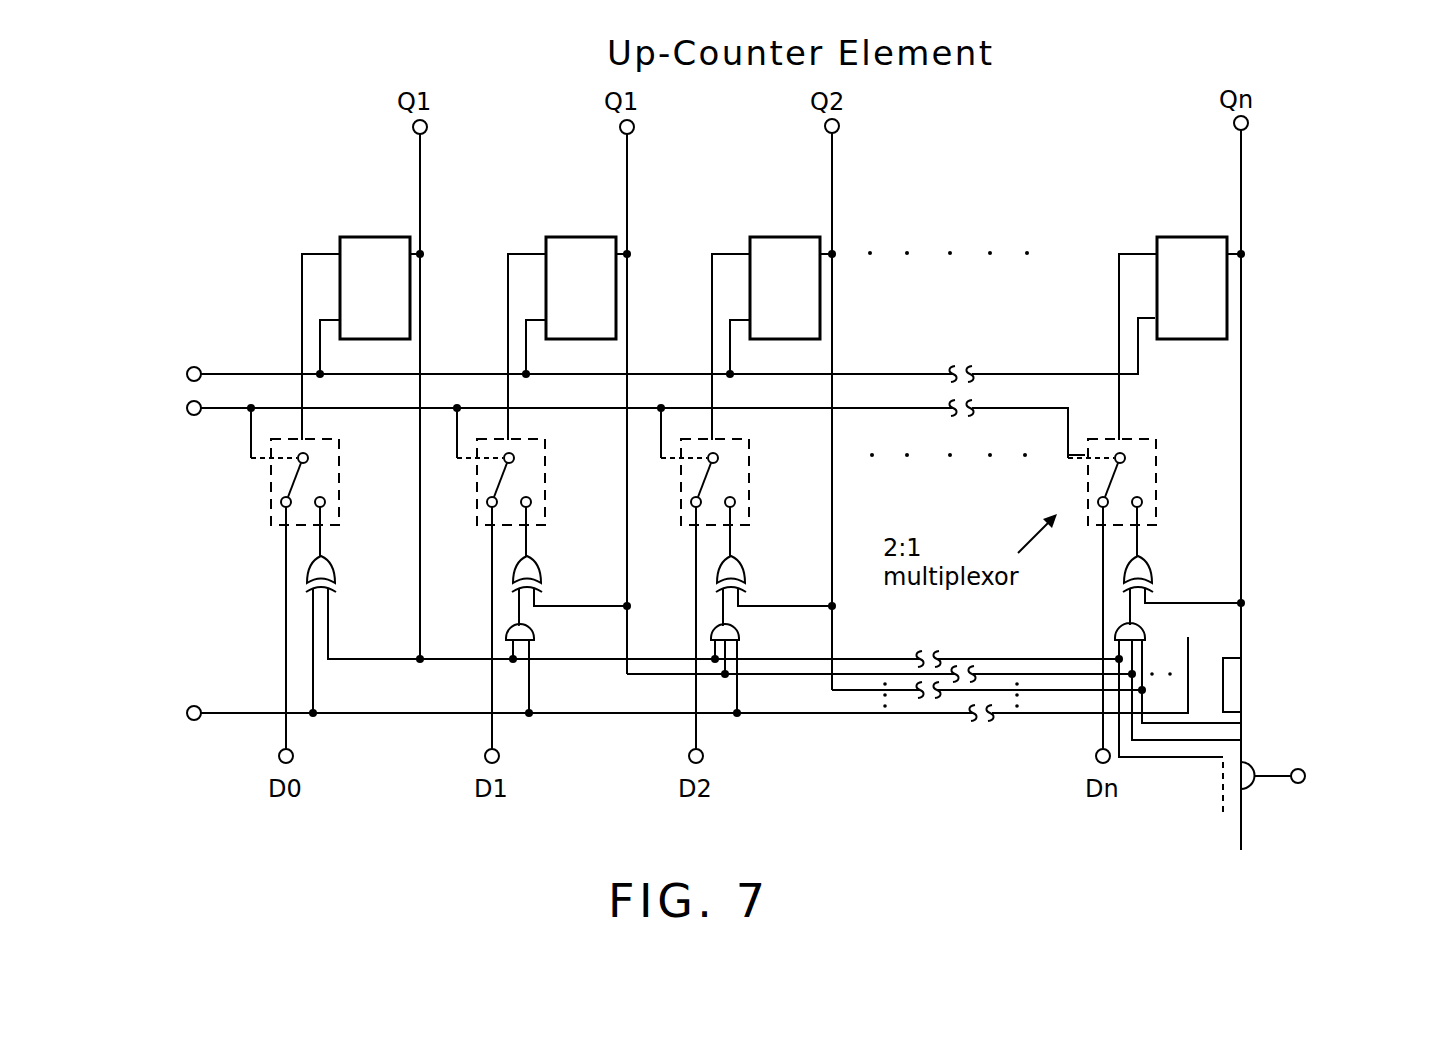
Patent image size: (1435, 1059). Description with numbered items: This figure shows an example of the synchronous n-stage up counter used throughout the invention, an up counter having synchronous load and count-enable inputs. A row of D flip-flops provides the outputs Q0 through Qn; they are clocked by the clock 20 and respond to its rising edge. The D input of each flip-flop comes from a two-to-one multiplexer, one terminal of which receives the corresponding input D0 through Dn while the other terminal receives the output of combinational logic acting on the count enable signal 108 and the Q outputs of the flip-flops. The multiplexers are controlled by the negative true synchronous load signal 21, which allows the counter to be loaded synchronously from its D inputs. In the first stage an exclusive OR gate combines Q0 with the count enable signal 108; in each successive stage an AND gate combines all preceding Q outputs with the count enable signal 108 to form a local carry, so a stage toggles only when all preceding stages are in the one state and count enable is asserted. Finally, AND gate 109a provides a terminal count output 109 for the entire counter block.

The clock 20 is at (265, 372).
The negative true synchronous load signal 21 is at (215, 411).
The count enable signal 108 is at (234, 711).
The terminal count output 109 is at (1275, 771).
The AND gate 109a is at (1250, 790).